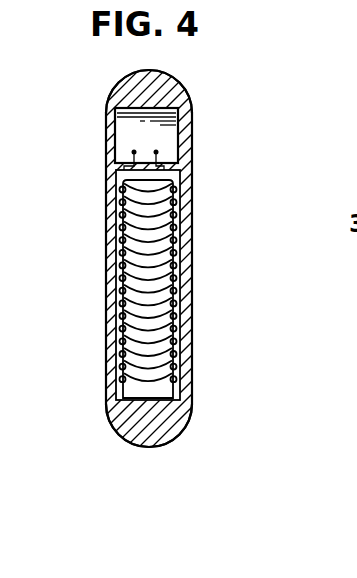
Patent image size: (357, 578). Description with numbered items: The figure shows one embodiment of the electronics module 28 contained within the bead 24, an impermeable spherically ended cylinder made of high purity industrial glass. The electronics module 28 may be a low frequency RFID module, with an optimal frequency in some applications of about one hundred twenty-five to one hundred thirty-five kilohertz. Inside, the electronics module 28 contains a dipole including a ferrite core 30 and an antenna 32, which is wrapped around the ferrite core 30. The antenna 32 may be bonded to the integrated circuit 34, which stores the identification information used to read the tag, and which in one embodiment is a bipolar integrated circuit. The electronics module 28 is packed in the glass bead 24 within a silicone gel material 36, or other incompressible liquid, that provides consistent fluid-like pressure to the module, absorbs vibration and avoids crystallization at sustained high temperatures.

The bead 24 is at (173, 435).
The electronics module 28 is at (166, 102).
The ferrite core 30 is at (158, 389).
The antenna 32 is at (182, 276).
The integrated circuit 34 is at (162, 133).
The silicone gel material 36 is at (125, 428).